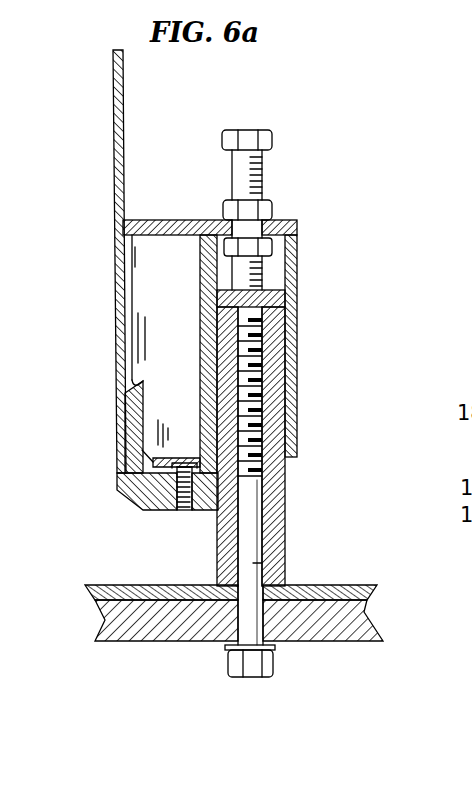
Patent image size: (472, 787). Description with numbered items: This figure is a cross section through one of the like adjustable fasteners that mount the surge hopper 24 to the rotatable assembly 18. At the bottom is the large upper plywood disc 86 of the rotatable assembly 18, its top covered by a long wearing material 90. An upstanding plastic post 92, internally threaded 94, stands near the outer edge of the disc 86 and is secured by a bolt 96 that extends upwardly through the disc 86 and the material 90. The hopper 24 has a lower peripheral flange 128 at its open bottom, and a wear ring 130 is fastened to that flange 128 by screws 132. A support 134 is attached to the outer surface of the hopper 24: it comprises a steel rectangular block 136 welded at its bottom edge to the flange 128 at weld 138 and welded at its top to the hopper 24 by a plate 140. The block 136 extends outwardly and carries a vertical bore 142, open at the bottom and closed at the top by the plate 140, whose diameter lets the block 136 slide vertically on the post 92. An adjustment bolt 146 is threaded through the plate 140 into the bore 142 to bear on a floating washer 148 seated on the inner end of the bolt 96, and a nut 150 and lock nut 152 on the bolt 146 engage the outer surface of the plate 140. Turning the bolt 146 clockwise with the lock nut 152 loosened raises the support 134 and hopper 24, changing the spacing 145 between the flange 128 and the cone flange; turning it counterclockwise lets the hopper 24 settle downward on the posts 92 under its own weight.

The rotatable assembly 18 is at (120, 395).
The surge hopper 24 is at (128, 95).
The upper plywood disc 86 is at (365, 623).
The wearing surface material 90 is at (344, 585).
The plastic post 92 is at (288, 503).
The internal threads 94 is at (296, 349).
The bolt 96 is at (292, 563).
The lower peripheral flange 128 is at (141, 386).
The wear ring 130 is at (120, 373).
The screw 132 is at (182, 517).
The support 134 is at (315, 403).
The rectangular block 136 is at (298, 399).
The weld 138 is at (194, 452).
The plate 140 is at (161, 218).
The vertical bore 142 is at (289, 347).
The spacing 145 is at (126, 563).
The adjustment bolt 146 is at (263, 160).
The floating washer 148 is at (281, 298).
The nut 150 is at (224, 262).
The lock nut 152 is at (272, 211).